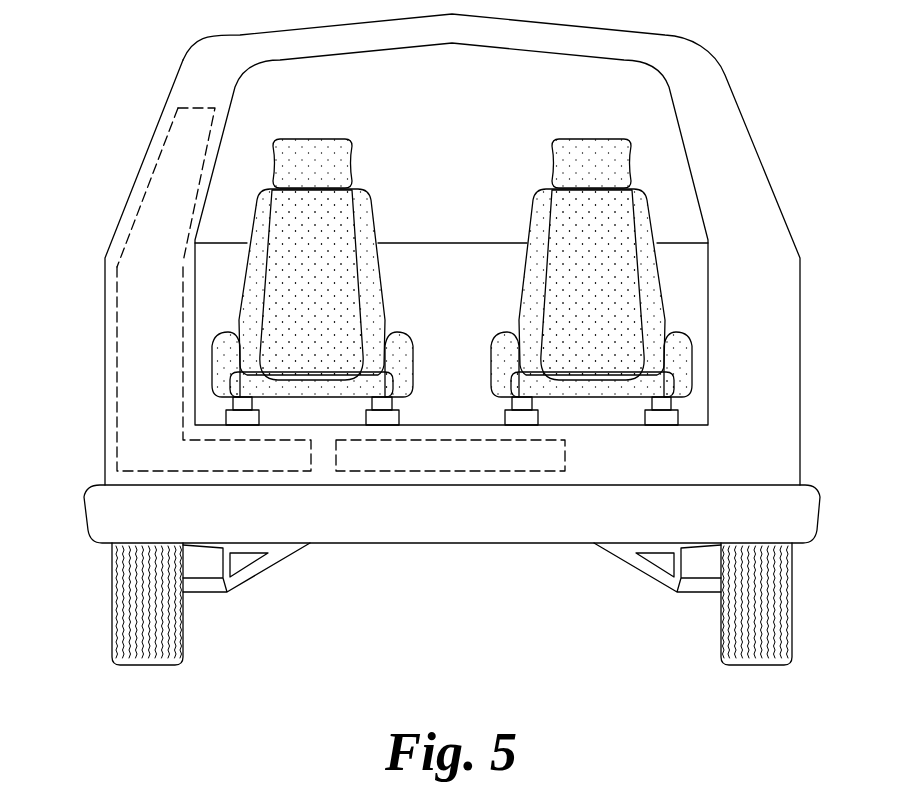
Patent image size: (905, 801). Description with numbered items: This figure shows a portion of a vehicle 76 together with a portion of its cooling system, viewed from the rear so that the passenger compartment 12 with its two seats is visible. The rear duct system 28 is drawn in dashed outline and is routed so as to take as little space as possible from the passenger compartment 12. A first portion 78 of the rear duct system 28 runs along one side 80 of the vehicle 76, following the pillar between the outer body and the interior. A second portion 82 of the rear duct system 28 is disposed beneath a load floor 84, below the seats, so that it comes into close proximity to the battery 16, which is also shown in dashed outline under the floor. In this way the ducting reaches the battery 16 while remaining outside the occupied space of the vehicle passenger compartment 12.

The passenger compartment 12 is at (469, 120).
The battery 16 is at (468, 471).
The rear duct system 28 is at (158, 157).
The vehicle 76 is at (727, 73).
The first portion 78 is at (128, 222).
The side 80 is at (135, 187).
The second portion 82 is at (281, 471).
The load floor 84 is at (617, 425).